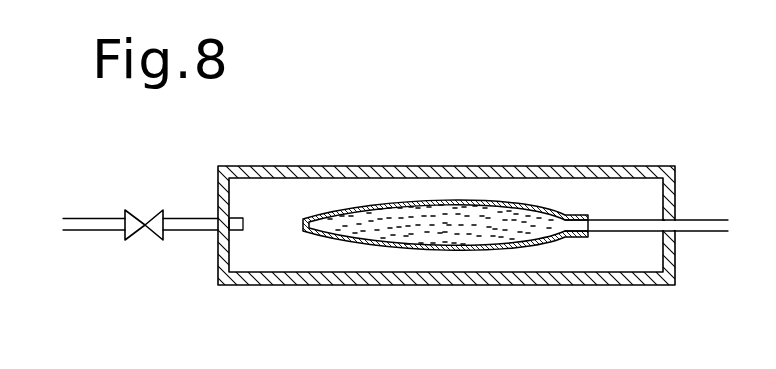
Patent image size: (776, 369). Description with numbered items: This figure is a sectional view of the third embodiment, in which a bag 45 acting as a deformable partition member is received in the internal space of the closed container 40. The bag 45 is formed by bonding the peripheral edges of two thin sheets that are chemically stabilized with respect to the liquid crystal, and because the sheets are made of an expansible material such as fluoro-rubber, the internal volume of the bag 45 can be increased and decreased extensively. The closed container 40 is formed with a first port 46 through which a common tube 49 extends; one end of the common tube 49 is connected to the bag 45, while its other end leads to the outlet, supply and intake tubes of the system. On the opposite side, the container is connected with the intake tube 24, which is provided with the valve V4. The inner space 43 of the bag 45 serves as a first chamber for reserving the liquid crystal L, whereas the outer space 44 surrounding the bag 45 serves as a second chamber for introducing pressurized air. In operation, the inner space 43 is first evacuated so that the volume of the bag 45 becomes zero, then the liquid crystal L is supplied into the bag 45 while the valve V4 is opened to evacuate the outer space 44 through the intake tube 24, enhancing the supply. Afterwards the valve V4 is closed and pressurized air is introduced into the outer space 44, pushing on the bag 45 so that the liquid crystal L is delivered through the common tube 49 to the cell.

The valve V4 is at (155, 213).
The intake tube 24 is at (187, 217).
The closed container 40 is at (380, 166).
The bag 45 is at (447, 198).
The inner space 43 is at (498, 218).
The common tube 49 is at (622, 218).
The first port 46 is at (667, 221).
The outer space 44 is at (590, 253).
The liquid crystal L is at (442, 232).